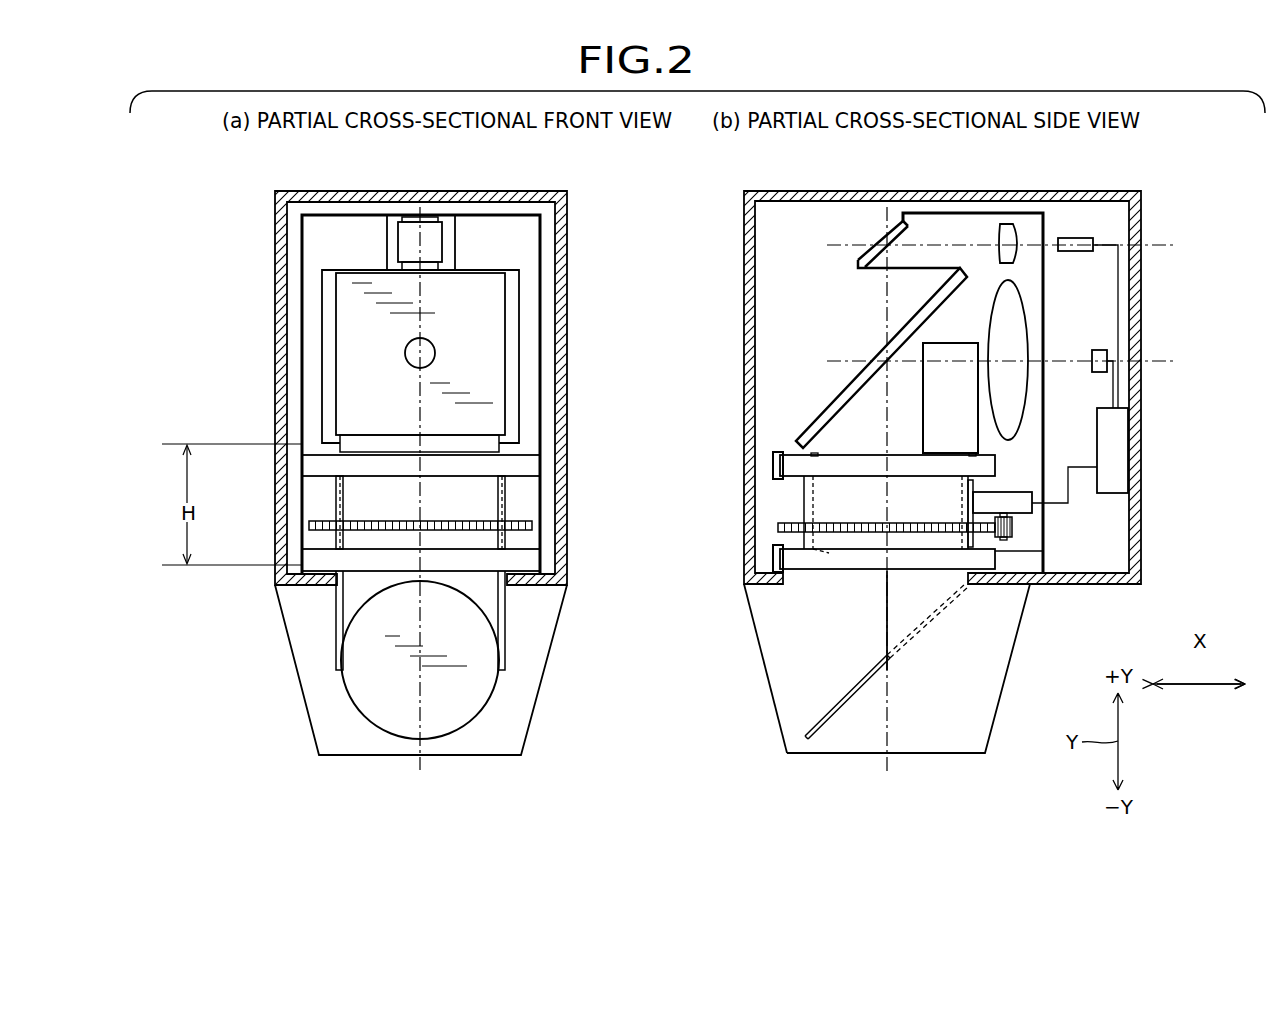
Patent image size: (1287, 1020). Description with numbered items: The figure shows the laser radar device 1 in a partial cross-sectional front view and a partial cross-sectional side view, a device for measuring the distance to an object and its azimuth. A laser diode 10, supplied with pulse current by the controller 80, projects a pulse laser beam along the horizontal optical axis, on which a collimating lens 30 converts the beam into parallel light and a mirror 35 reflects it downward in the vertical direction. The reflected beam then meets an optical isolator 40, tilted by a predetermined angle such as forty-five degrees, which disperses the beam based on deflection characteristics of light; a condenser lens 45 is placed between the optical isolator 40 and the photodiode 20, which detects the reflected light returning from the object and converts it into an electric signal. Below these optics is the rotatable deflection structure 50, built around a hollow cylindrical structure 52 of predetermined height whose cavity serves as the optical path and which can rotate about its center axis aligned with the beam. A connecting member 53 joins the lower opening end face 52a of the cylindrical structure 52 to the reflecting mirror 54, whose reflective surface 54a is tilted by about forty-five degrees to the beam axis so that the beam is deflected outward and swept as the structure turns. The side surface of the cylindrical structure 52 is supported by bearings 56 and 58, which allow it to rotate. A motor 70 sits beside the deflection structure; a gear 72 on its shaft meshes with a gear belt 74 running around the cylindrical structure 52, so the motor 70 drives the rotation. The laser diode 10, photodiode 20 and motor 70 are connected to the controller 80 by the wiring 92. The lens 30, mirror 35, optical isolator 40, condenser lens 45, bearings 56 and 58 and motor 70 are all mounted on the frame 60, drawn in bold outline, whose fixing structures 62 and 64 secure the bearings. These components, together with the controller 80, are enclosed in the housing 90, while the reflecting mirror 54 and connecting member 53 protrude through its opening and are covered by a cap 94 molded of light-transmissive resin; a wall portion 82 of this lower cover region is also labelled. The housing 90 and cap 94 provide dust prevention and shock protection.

The laser radar device 1 is at (497, 182).
The laser diode 10 is at (1077, 231).
The photodiode 20 is at (1100, 350).
The lens 30 is at (1012, 223).
The mirror 35 is at (405, 242).
The optical isolator 40 is at (347, 357).
The condenser lens 45 is at (1023, 307).
The rotatable deflection structure 50 is at (332, 502).
The cylindrical structure 52 is at (507, 488).
The opening end face 52a is at (855, 575).
The connecting member 53 is at (507, 622).
The reflecting mirror 54 is at (598, 697).
The reflective surface 54a is at (373, 695).
The bearing 56 is at (995, 466).
The bearing 58 is at (995, 558).
The frame 60 is at (542, 393).
The fixing structure 62 is at (308, 465).
The fixing structure 64 is at (312, 560).
The motor 70 is at (1002, 492).
The gear 72 is at (1012, 523).
The gear belt 74 is at (532, 525).
The controller 80 is at (1112, 494).
The cover wall 82 is at (754, 640).
The housing 90 is at (567, 353).
The wiring 92 is at (1120, 267).
The cap 94 is at (543, 667).